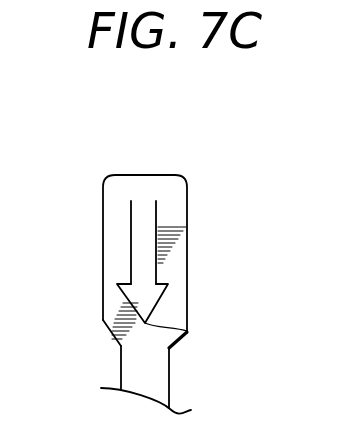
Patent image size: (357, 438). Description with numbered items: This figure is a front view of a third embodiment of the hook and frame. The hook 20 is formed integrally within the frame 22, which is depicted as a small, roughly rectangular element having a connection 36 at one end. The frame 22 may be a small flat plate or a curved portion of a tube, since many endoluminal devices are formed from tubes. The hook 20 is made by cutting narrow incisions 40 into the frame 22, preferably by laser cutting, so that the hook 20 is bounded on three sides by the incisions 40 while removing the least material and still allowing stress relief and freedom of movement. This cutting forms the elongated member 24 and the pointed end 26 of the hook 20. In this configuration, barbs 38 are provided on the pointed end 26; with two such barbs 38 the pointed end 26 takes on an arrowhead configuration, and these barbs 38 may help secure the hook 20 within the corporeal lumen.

The frame 22 is at (108, 175).
The incisions 40 is at (131, 231).
The hook 20 is at (130, 282).
The elongated member 24 is at (157, 223).
The barbs 38 is at (122, 290).
The pointed end 26 is at (182, 328).
The connection 36 is at (155, 372).